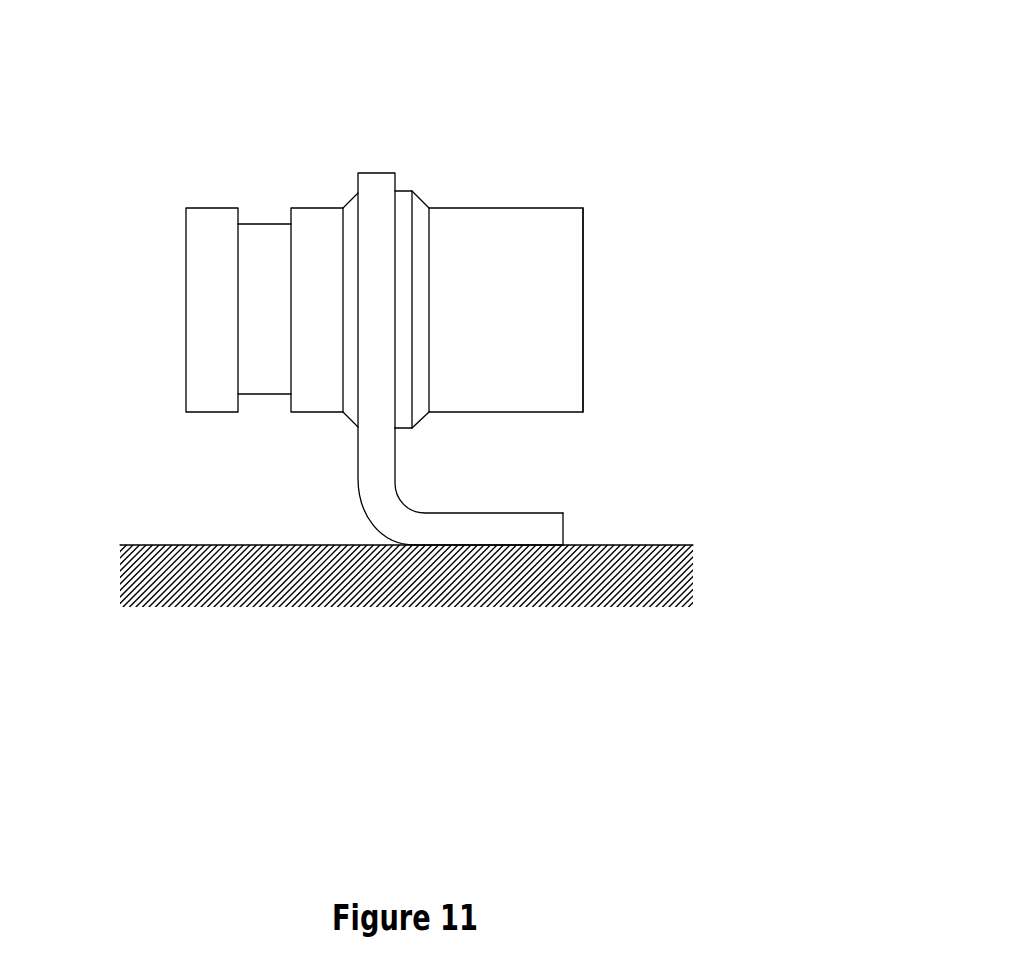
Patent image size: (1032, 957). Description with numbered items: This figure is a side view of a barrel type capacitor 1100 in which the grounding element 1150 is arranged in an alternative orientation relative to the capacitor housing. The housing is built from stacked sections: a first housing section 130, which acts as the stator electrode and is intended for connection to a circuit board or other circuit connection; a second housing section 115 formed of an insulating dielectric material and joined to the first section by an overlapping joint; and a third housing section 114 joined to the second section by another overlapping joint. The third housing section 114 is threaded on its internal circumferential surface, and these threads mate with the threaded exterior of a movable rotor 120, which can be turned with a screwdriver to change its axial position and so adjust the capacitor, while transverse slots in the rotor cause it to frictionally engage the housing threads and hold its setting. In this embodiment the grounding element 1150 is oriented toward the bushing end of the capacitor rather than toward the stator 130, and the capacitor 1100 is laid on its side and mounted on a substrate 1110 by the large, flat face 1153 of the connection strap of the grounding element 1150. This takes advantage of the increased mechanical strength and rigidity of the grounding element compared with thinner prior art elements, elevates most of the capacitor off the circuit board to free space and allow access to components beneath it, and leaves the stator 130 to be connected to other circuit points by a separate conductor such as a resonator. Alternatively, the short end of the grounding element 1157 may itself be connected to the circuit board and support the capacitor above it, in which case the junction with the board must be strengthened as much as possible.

The capacitor 1100 is at (725, 90).
The third housing section 114 is at (510, 242).
The second housing section 115 is at (262, 258).
The movable rotor 120 is at (583, 325).
The first housing section 130 is at (186, 333).
The substrate 1110 is at (197, 580).
The grounding element 1150 is at (608, 388).
The flat face 1153 is at (508, 553).
The short end of the grounding element 1157 is at (565, 537).